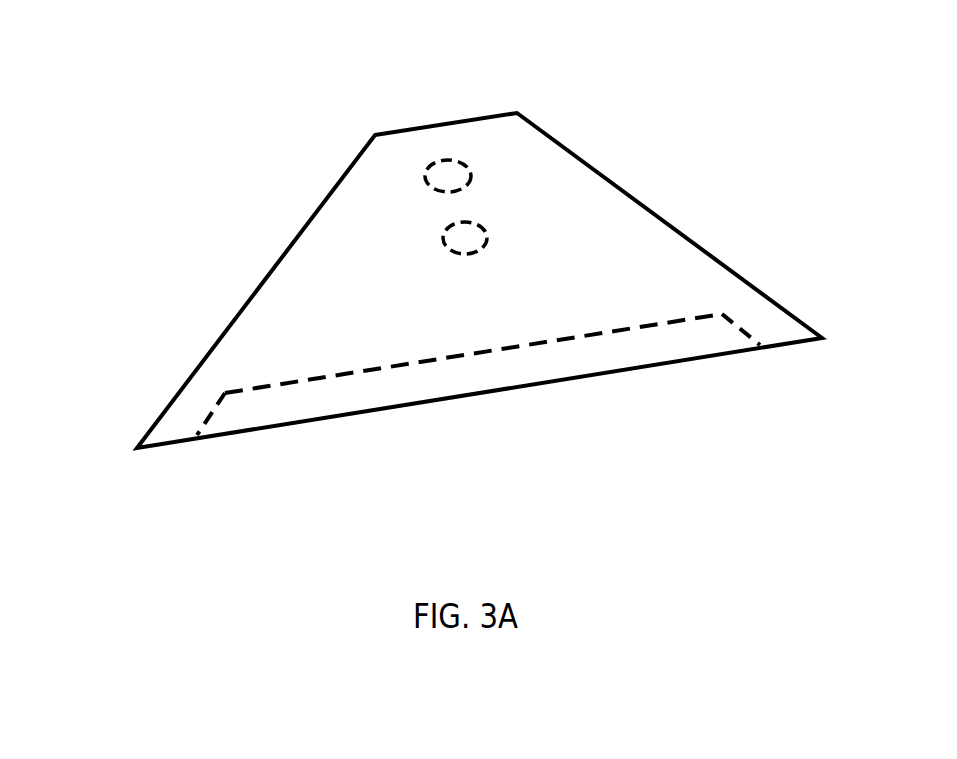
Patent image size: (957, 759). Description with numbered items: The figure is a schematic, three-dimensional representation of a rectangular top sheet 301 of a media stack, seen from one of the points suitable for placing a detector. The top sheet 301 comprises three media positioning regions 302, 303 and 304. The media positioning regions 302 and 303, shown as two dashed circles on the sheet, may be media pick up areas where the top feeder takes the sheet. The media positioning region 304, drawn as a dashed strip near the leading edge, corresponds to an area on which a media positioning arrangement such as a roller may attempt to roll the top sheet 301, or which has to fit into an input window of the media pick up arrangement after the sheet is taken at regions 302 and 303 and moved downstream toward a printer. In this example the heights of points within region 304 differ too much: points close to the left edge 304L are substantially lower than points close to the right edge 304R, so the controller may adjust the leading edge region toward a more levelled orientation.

The top sheet 301 is at (383, 287).
The media positioning region 302 is at (436, 161).
The media positioning region 303 is at (490, 237).
The media positioning region 304 is at (500, 369).
The left edge of the region 304L is at (203, 417).
The right edge of the region 304R is at (744, 323).